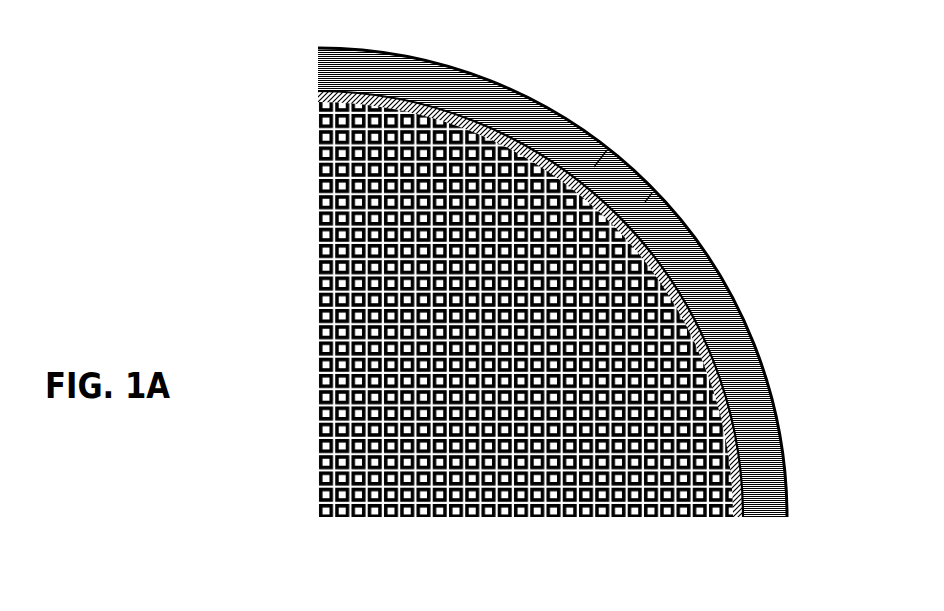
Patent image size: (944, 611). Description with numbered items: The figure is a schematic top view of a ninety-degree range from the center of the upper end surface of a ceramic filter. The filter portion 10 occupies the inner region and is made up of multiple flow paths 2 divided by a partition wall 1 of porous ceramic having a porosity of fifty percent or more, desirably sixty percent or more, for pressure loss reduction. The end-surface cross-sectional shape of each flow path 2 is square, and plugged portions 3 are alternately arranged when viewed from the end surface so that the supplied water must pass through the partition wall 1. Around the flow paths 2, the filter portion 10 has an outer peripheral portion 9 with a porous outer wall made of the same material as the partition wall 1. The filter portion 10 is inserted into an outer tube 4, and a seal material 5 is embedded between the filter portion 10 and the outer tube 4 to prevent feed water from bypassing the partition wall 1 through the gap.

The partition wall 1 is at (536, 129).
The flow path 2 is at (652, 193).
The plugged portion 3 is at (607, 150).
The outer tube 4 is at (724, 329).
The seal material 5 is at (697, 242).
The outer peripheral portion 9 is at (752, 422).
The filter portion 10 is at (306, 100).